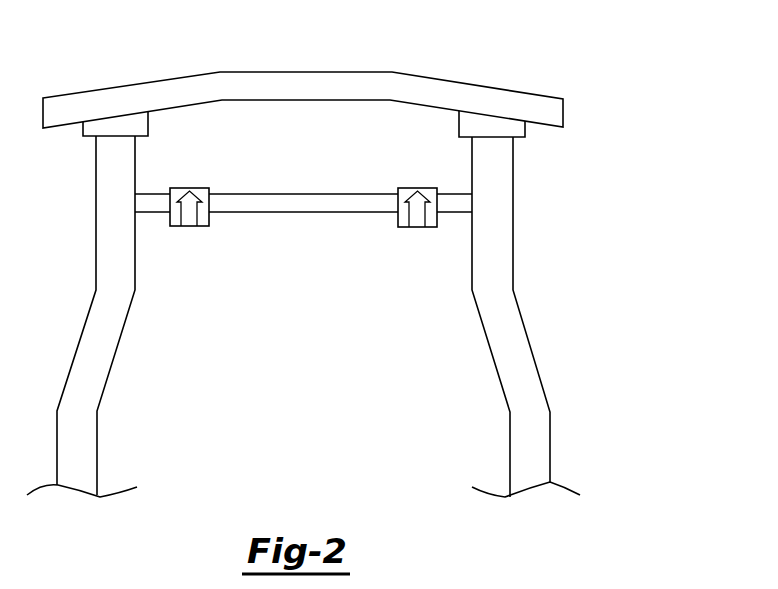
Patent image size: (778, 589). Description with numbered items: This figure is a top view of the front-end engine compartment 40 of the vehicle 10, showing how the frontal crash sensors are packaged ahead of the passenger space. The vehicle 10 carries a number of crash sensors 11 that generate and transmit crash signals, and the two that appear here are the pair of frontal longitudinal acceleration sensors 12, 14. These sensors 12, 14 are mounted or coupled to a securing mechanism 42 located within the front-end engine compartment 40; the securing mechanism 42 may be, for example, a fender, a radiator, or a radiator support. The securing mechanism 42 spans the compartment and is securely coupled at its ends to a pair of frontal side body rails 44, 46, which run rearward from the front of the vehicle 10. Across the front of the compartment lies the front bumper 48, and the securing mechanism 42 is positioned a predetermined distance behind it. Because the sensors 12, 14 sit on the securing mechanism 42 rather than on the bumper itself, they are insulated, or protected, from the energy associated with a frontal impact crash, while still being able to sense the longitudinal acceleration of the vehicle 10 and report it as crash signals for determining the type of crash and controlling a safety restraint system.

The vehicle 10 is at (655, 110).
The crash sensors 11 is at (383, 245).
The frontal longitudinal acceleration sensor 12 is at (190, 226).
The frontal longitudinal acceleration sensor 14 is at (412, 227).
The front-end engine compartment 40 is at (557, 94).
The securing mechanism 42 is at (302, 194).
The frontal side body rail 44 is at (96, 223).
The frontal side body rail 46 is at (513, 223).
The front bumper 48 is at (443, 78).